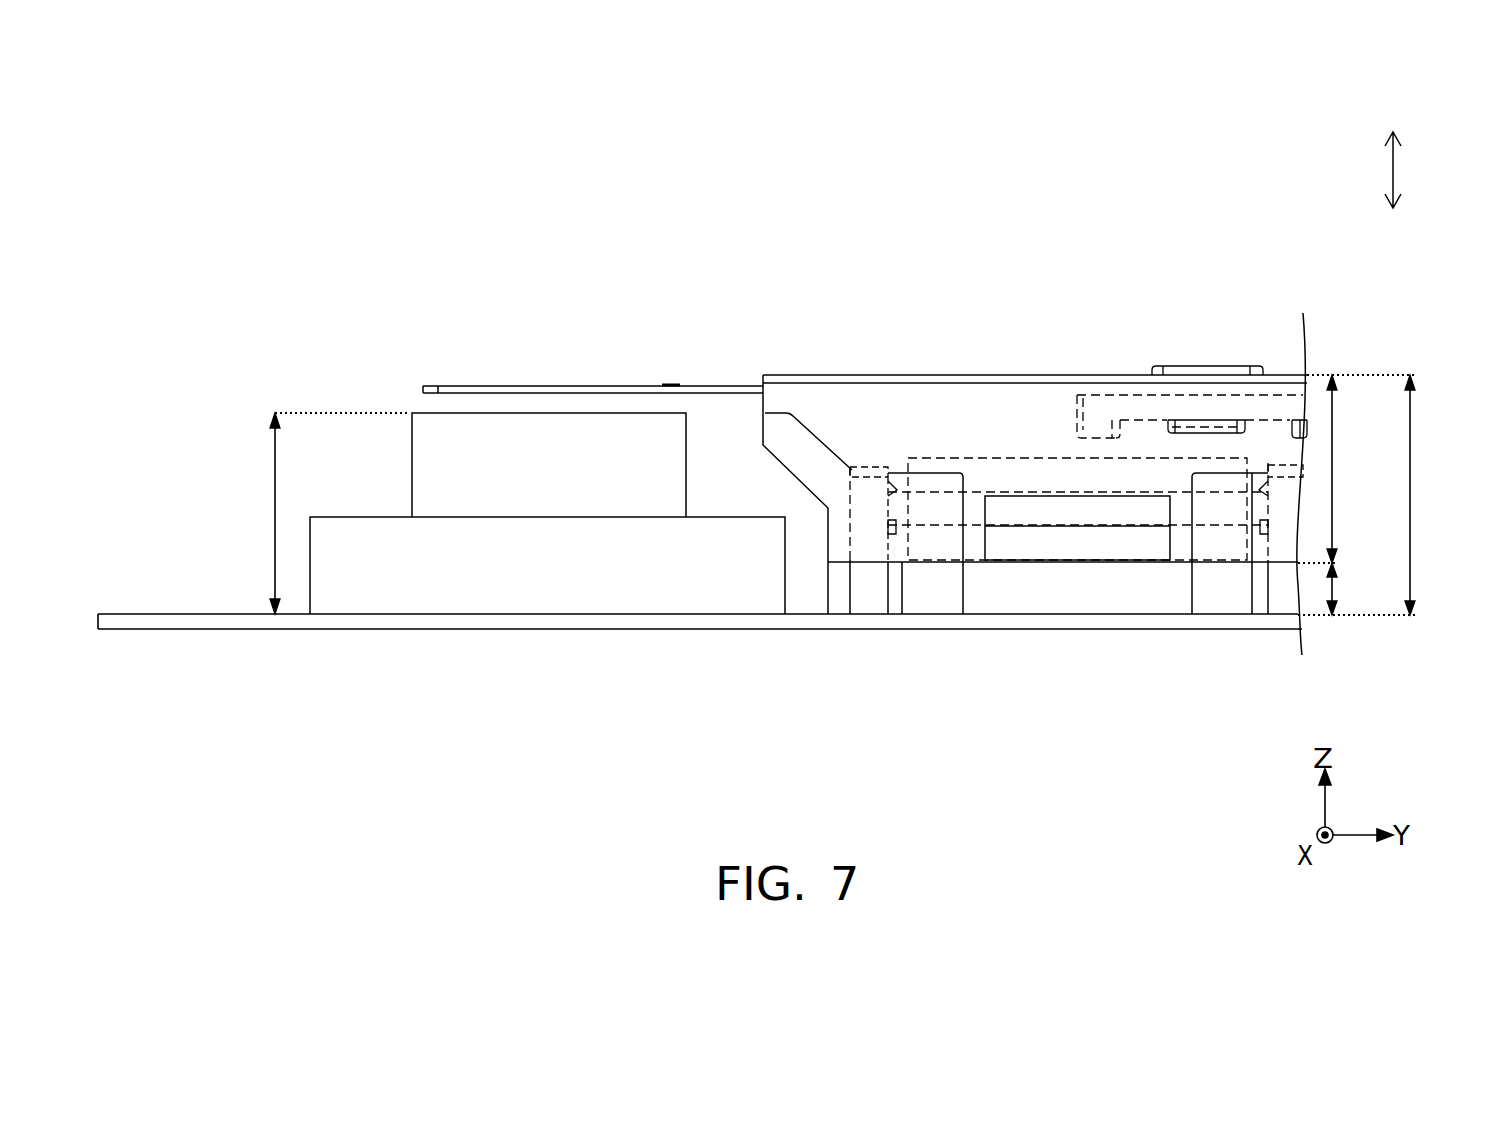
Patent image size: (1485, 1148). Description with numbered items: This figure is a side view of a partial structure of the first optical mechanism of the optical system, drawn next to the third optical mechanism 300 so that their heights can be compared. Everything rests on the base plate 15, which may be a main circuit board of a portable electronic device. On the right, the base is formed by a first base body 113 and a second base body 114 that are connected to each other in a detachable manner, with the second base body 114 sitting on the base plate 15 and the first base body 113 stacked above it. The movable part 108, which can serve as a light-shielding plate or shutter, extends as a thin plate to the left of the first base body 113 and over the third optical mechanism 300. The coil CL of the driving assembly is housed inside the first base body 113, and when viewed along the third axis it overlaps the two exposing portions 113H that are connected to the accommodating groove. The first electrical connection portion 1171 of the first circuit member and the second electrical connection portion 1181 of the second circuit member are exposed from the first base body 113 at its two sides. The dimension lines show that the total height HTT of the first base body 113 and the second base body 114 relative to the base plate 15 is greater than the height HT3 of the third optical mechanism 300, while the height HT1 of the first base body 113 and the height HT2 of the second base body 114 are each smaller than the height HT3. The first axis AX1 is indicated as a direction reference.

The movable part 108 is at (550, 380).
The first base body 113 is at (1268, 443).
The coil CL is at (1047, 505).
The exposing portions 113H is at (1023, 563).
The second base body 114 is at (1150, 598).
The base plate 15 is at (922, 623).
The second electrical connection portion 1181 is at (867, 590).
The first electrical connection portion 1171 is at (1282, 590).
The third optical mechanism 300 is at (505, 600).
The height of the first base body HT1 is at (1356, 469).
The height of the second base body HT2 is at (1358, 589).
The height of the third optical mechanism HT3 is at (311, 513).
The total height HTT is at (1384, 495).
The first axis AX1 is at (1393, 154).